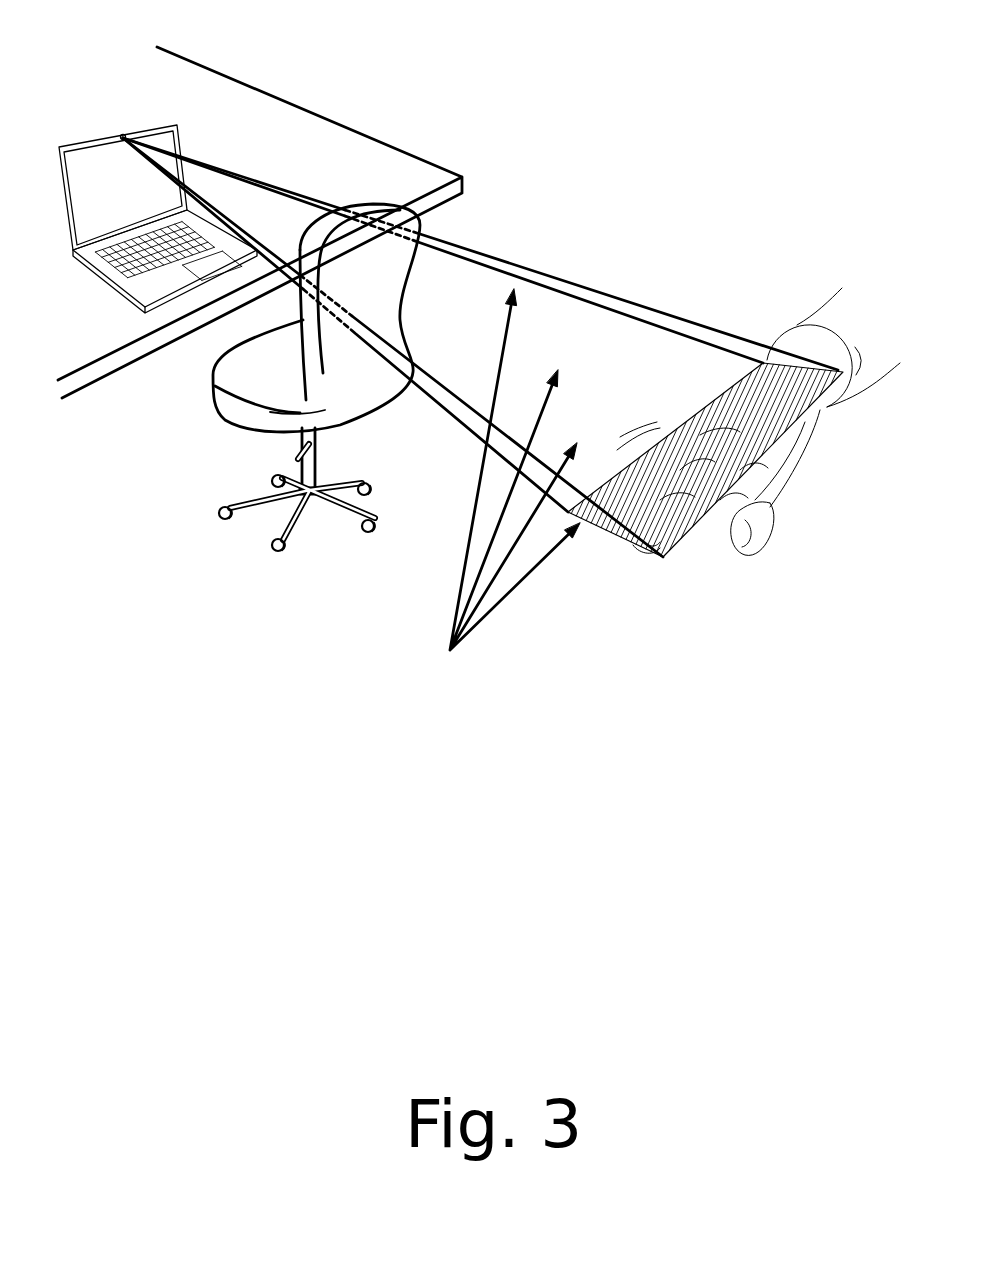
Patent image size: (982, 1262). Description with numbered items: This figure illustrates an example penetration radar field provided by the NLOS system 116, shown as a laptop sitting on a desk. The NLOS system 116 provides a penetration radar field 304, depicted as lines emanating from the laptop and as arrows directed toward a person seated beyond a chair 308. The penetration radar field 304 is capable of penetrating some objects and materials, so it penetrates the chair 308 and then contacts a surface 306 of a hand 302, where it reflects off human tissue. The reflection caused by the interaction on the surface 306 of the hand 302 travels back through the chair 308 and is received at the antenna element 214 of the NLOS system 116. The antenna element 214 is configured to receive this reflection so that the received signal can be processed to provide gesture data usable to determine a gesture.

The NLOS system 116 is at (120, 135).
The antenna element 214 is at (124, 138).
The chair 308 is at (388, 207).
The hand 302 is at (872, 438).
The surface 306 is at (668, 438).
The penetration radar field 304 is at (452, 650).